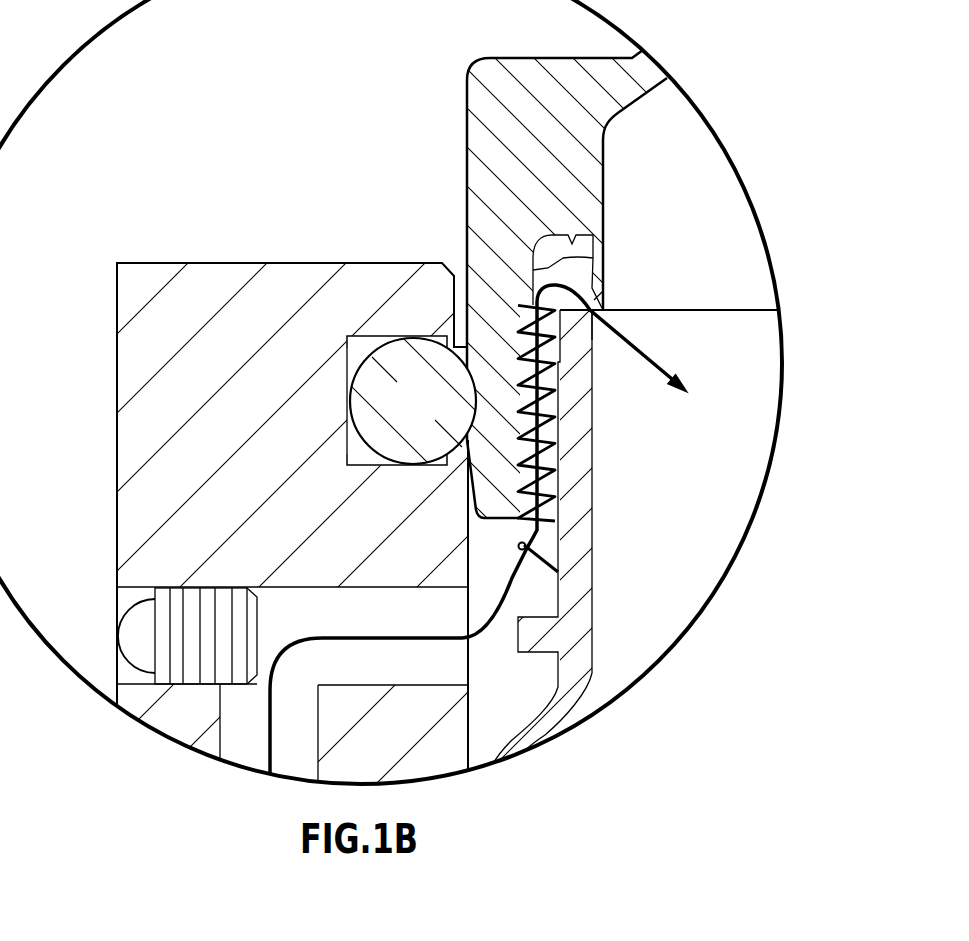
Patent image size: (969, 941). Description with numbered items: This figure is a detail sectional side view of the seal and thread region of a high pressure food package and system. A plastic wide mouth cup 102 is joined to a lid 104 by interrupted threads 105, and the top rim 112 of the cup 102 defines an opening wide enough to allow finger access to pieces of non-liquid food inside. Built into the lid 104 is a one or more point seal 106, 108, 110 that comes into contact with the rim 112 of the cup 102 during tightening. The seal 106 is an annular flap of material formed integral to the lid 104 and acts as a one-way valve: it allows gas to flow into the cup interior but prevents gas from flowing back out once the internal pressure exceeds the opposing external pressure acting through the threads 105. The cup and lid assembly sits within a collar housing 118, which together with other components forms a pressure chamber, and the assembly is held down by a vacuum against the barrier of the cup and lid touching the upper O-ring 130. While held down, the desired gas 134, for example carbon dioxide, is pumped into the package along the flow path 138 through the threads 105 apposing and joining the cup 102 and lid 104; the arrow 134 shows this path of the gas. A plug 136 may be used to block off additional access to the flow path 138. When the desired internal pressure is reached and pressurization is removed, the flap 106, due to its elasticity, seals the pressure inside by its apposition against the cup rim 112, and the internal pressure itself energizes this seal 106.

The wide mouth cup 102 is at (593, 603).
The lid 104 is at (467, 123).
The interrupted threads 105 is at (560, 430).
The seal flap 106 is at (597, 290).
The point seal 108 is at (597, 236).
The point seal 110 is at (563, 262).
The top rim 112 is at (580, 312).
The collar housing 118 is at (117, 378).
The upper O-ring 130 is at (436, 412).
The gas 134 is at (653, 353).
The plug 136 is at (130, 632).
The flow path 138 is at (247, 757).